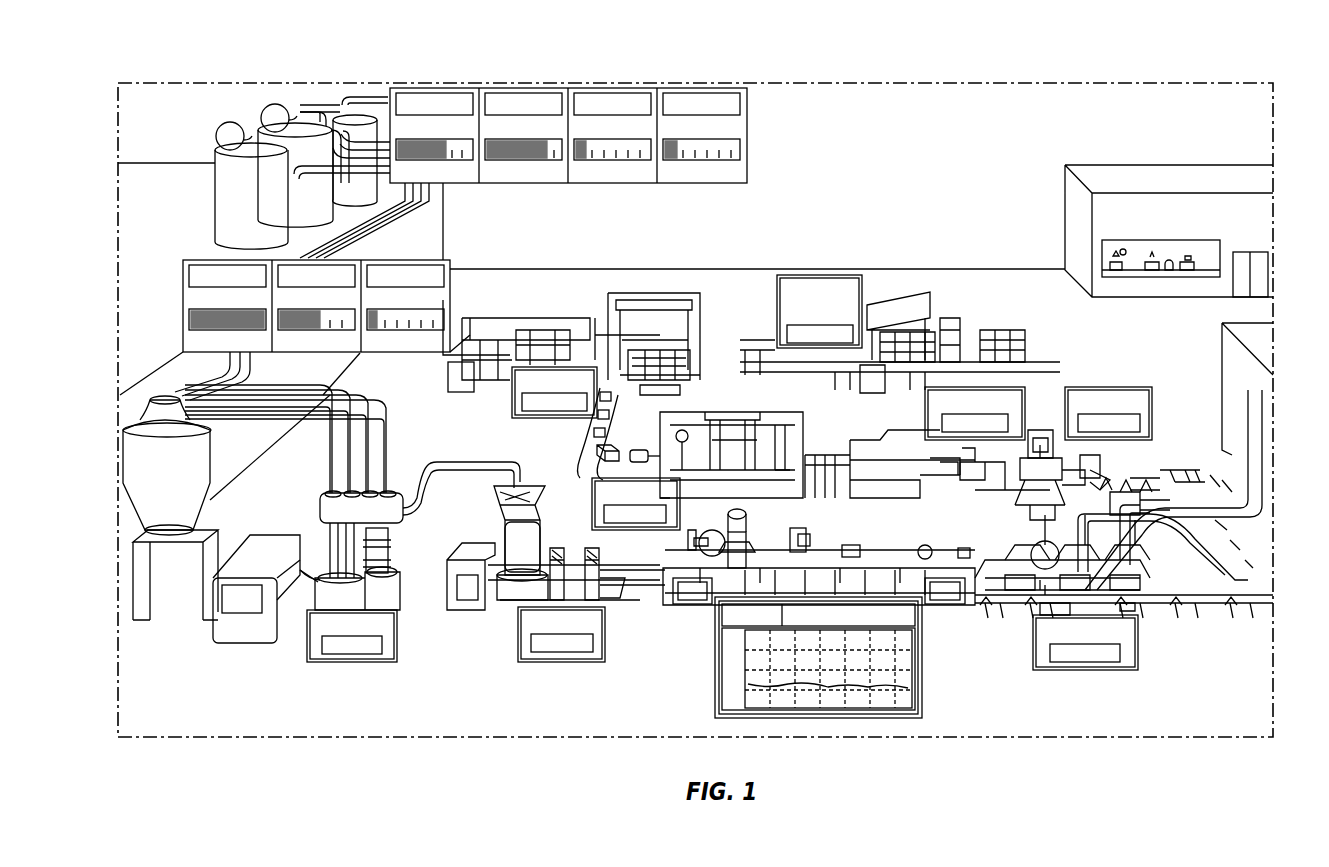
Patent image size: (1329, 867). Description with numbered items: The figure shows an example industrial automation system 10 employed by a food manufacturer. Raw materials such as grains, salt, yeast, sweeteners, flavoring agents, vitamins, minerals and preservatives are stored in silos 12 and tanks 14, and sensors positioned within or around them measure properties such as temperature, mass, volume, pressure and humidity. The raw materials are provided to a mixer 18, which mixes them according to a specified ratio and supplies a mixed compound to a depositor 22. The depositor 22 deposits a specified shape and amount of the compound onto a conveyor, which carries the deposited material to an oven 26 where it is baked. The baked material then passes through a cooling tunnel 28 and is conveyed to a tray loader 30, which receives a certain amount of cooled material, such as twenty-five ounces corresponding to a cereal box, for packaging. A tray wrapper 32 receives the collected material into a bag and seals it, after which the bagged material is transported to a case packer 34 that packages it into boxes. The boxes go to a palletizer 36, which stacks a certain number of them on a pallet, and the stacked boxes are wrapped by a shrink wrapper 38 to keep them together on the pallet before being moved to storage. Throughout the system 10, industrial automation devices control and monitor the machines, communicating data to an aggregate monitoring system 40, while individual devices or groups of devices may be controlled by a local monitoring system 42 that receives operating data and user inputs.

The industrial automation system 10 is at (1212, 44).
The silos 12 is at (316, 104).
The tanks 14 is at (173, 316).
The mixer 18 is at (398, 620).
The depositor 22 is at (531, 585).
The oven 26 is at (819, 613).
The cooling tunnel 28 is at (1071, 592).
The tray loader 30 is at (1099, 426).
The tray wrapper 32 is at (949, 438).
The case packer 34 is at (694, 487).
The palletizer 36 is at (563, 367).
The shrink wrapper 38 is at (900, 297).
The aggregate monitoring system 40 is at (1168, 255).
The local monitoring system 42 is at (237, 622).